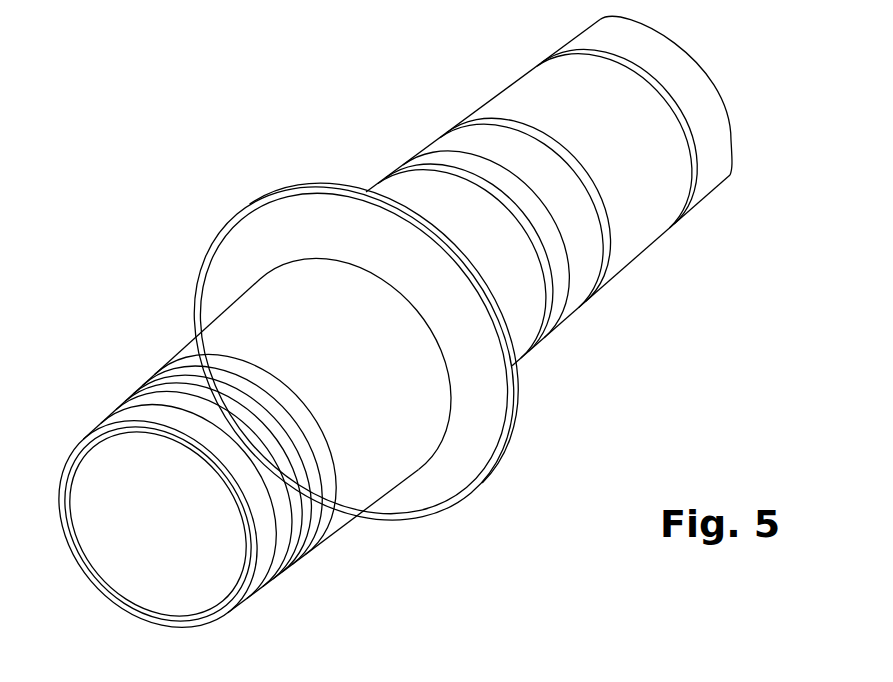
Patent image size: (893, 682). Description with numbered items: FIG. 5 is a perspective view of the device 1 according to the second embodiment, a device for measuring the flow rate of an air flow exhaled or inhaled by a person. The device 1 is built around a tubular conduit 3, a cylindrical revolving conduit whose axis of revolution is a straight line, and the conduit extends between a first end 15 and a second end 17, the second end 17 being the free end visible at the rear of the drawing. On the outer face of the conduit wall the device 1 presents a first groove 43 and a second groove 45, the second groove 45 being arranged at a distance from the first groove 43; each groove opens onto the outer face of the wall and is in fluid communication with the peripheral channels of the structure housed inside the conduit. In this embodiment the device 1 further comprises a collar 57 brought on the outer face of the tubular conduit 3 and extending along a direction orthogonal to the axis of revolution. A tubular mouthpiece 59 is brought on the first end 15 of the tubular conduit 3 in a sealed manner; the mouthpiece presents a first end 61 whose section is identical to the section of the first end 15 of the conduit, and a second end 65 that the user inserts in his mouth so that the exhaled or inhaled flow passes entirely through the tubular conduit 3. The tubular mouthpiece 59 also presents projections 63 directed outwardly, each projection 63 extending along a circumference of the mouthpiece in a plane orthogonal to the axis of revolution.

The device 1 is at (401, 344).
The tubular conduit 3 is at (513, 287).
The first end 15 is at (355, 436).
The second end 17 is at (742, 117).
The first groove 43 is at (435, 212).
The second groove 45 is at (508, 118).
The collar 57 is at (489, 414).
The tubular mouthpiece 59 is at (150, 408).
The first end 61 is at (337, 470).
The projections 63 is at (305, 488).
The second end 65 is at (108, 593).